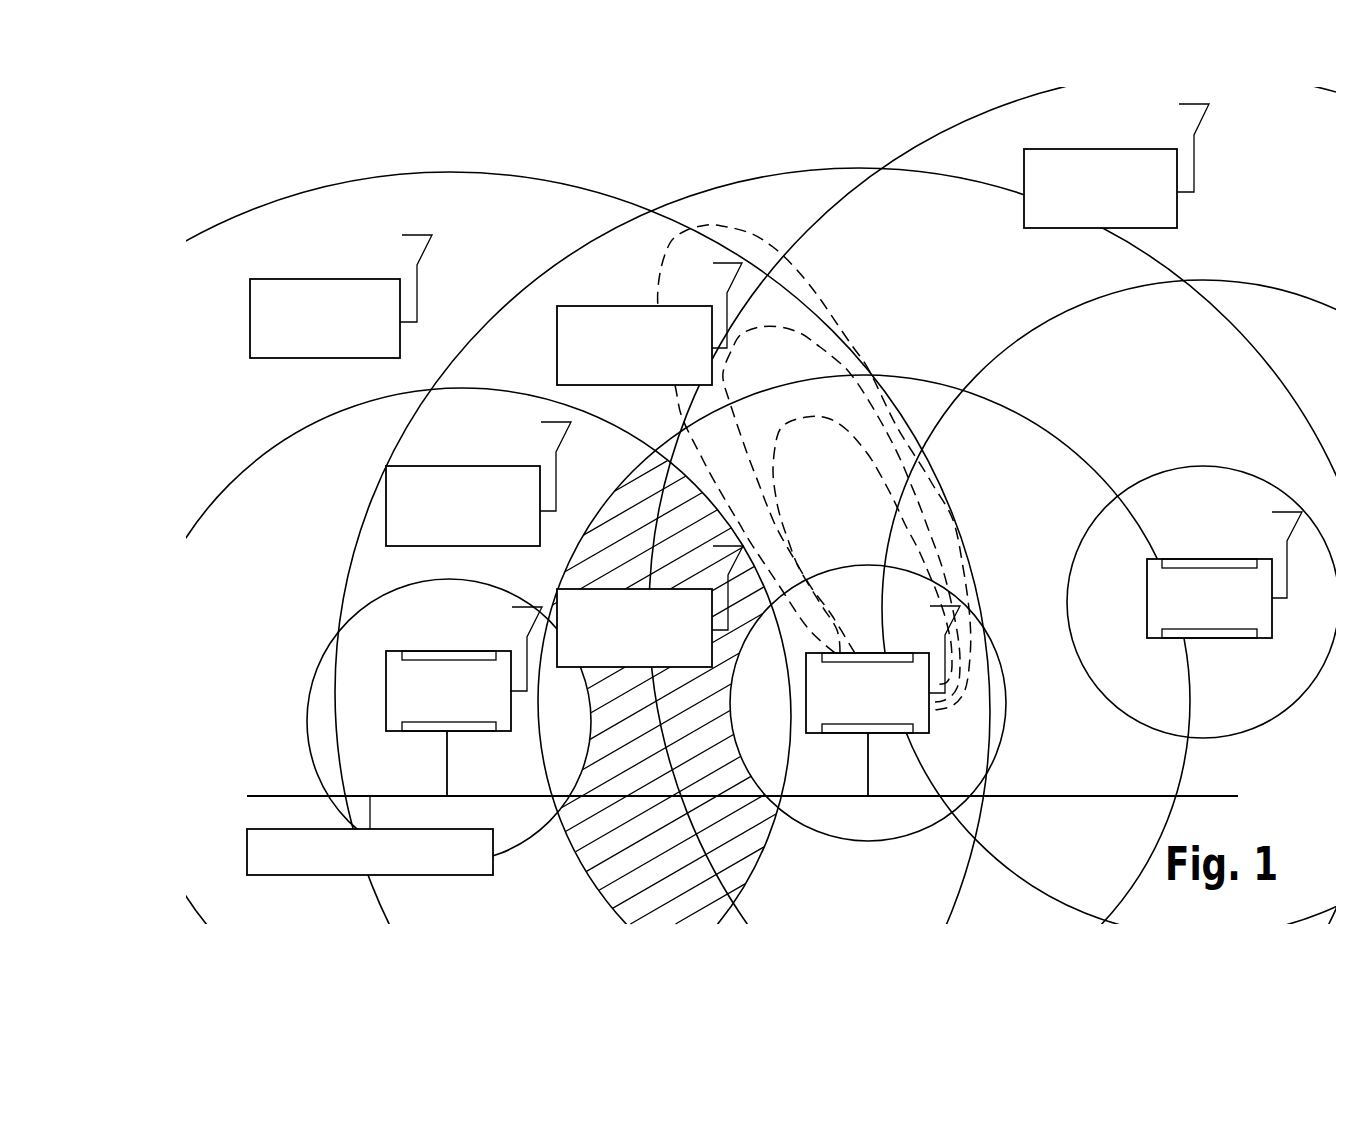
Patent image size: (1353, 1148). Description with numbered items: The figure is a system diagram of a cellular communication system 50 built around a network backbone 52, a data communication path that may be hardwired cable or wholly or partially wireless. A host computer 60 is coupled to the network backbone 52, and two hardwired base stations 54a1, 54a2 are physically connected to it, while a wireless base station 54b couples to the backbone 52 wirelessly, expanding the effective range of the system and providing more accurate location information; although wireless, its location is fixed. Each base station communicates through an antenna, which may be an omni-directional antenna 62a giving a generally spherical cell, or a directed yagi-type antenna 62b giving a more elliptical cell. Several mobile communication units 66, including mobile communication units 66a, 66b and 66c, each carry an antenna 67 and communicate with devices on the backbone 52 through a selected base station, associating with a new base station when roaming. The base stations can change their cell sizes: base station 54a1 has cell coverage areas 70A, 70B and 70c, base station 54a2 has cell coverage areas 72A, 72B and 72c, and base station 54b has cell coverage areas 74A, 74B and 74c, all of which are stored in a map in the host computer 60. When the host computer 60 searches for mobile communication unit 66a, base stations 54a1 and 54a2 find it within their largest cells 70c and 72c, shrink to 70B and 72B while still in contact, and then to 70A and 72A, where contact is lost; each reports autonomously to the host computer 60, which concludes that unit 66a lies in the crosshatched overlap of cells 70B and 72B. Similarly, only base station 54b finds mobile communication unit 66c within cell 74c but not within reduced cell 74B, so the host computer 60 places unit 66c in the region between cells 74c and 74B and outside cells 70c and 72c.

The cellular communication system 50 is at (690, 137).
The network backbone 52 is at (1217, 795).
The base station 54a1 is at (930, 717).
The base station 54a2 is at (467, 733).
The wireless base station 54b is at (1240, 640).
The host computer 60 is at (430, 877).
The omni-directional antenna 62a is at (552, 617).
The yagi-type antenna 62b is at (943, 604).
The mobile communication unit 66 is at (308, 279).
The mobile communication unit 66a is at (563, 668).
The mobile communication unit 66b is at (457, 466).
The mobile communication unit 66c is at (1090, 149).
The antenna 67 is at (417, 234).
The cell coverage area 70A is at (995, 652).
The cell coverage area 70B is at (907, 376).
The cell coverage area 70c is at (783, 176).
The cell coverage area 72A is at (378, 600).
The cell coverage area 72B is at (482, 388).
The cell coverage area 72c is at (398, 172).
The cell coverage area 74A is at (1205, 465).
The cell coverage area 74B is at (1254, 283).
The cell coverage area 74c is at (932, 137).